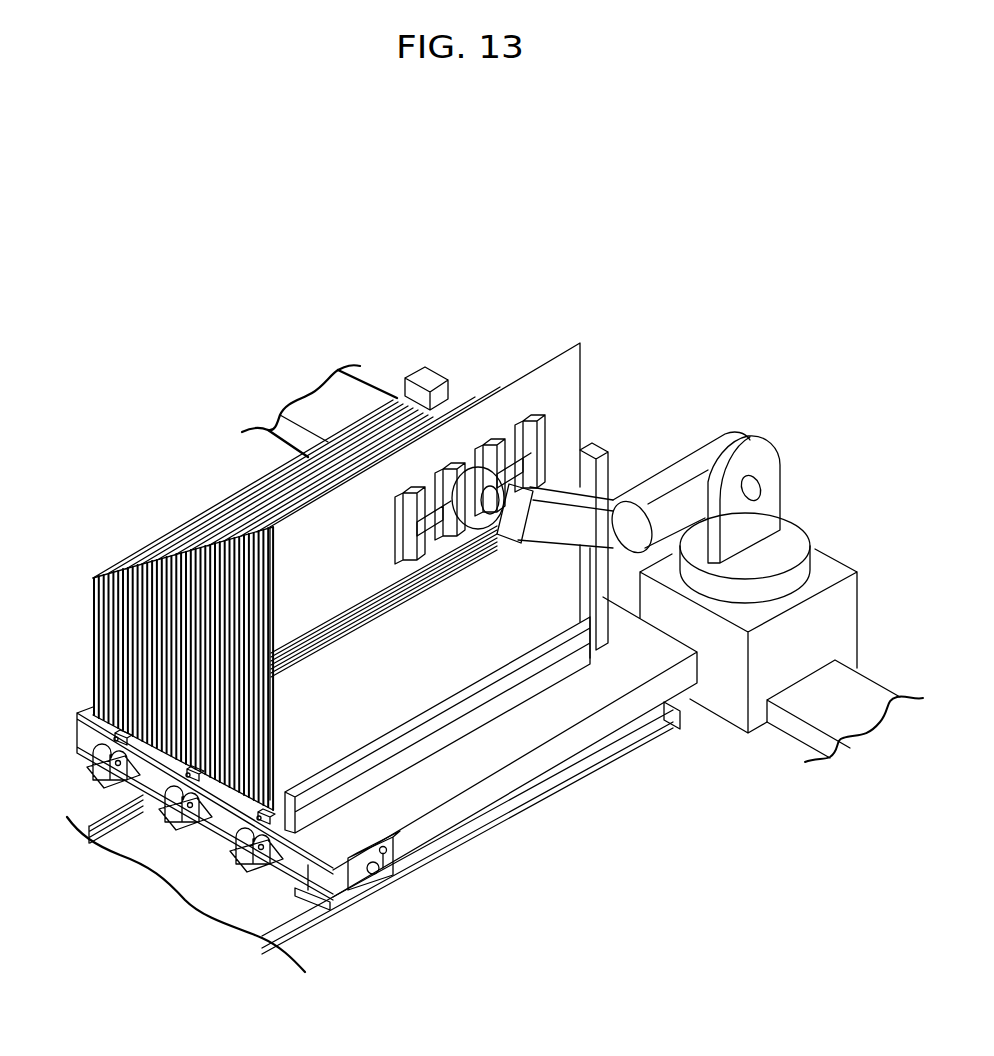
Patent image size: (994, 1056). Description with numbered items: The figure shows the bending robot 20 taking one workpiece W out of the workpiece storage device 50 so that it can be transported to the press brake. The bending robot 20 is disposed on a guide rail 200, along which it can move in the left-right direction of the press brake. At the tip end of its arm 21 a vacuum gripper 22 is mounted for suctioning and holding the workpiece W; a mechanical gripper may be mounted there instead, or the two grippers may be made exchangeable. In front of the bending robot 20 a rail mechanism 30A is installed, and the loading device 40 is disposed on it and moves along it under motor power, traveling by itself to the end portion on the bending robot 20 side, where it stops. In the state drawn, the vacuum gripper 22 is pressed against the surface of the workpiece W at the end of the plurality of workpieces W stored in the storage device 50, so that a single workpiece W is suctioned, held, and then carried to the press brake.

The workpiece W is at (553, 398).
The vacuum gripper 22 is at (535, 440).
The arm 21 is at (553, 533).
The bending robot 20 is at (793, 535).
The guide rail 200 is at (867, 697).
The loading device 40 is at (520, 743).
The storage device 50 is at (403, 753).
The rail mechanism 30A is at (103, 827).